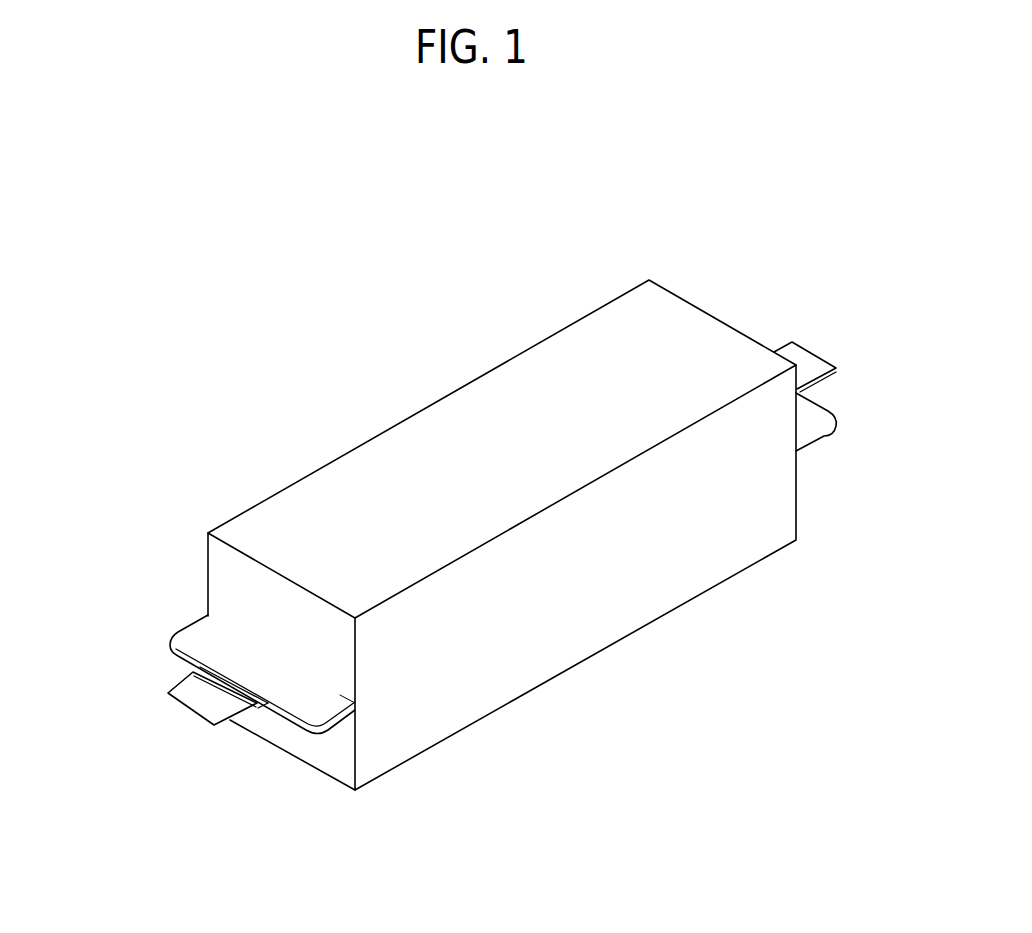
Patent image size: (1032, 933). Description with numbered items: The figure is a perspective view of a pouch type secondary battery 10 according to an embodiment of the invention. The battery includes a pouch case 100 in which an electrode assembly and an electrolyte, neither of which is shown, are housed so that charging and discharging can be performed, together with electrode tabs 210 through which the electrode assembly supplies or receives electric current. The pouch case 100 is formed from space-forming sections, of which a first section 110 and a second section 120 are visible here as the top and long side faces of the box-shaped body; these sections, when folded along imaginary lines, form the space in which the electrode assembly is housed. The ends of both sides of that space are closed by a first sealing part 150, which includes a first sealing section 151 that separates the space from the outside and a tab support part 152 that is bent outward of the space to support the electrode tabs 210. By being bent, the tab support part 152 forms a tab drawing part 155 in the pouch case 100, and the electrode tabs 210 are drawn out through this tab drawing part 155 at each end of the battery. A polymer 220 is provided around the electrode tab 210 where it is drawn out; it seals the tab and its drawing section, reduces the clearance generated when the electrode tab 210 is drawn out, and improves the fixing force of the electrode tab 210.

The pouch type secondary battery 10 is at (62, 162).
The pouch case 100 is at (366, 429).
The first section 110 is at (535, 365).
The second section 120 is at (675, 590).
The first sealing part 150 is at (92, 599).
The first sealing section 151 is at (218, 567).
The tab support part 152 is at (210, 644).
The tab drawing part 155 is at (336, 690).
The electrode tab 210 is at (203, 703).
The polymer 220 is at (260, 708).